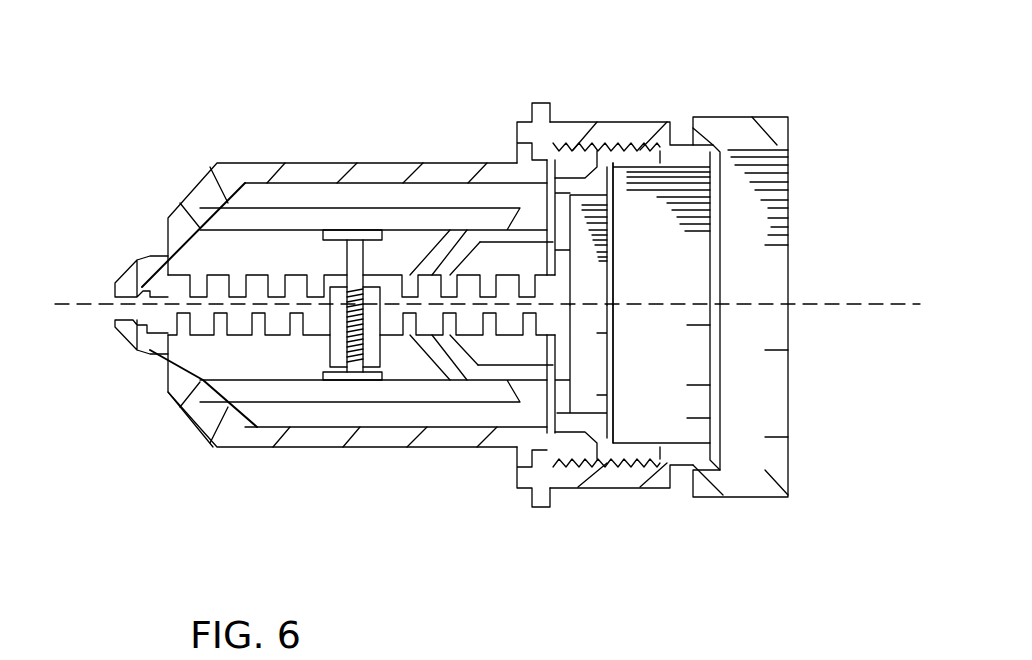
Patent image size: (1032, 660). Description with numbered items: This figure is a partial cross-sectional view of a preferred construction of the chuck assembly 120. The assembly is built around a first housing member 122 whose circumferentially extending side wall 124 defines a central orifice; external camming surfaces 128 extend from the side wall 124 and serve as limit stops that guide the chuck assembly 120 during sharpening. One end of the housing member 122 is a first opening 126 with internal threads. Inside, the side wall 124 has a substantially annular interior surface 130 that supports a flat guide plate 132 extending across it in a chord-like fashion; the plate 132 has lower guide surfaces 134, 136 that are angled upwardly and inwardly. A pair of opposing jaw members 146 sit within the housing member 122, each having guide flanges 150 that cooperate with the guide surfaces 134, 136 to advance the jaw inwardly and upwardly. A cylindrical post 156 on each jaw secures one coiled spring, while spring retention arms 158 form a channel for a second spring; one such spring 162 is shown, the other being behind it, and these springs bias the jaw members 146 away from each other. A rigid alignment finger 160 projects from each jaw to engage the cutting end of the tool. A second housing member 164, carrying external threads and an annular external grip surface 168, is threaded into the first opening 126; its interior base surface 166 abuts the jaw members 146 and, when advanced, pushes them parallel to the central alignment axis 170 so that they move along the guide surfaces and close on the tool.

The chuck assembly 120 is at (72, 116).
The first housing member 122 is at (206, 116).
The side wall 124 is at (242, 172).
The first opening 126 is at (633, 473).
The external camming surfaces 128 is at (517, 128).
The annular interior surface 130 is at (323, 195).
The guide plate 132 is at (273, 395).
The lower guide surface 134 is at (500, 392).
The lower guide surface 136 is at (500, 212).
The jaw members 146 is at (243, 258).
The guide flanges 150 is at (525, 262).
The cylindrical post 156 is at (355, 246).
The spring retention arms 158 is at (337, 370).
The alignment finger 160 is at (150, 257).
The spring 162 is at (203, 430).
The second housing member 164 is at (708, 524).
The interior base surface 166 is at (567, 378).
The external grip surface 168 is at (722, 116).
The central alignment axis 170 is at (833, 303).